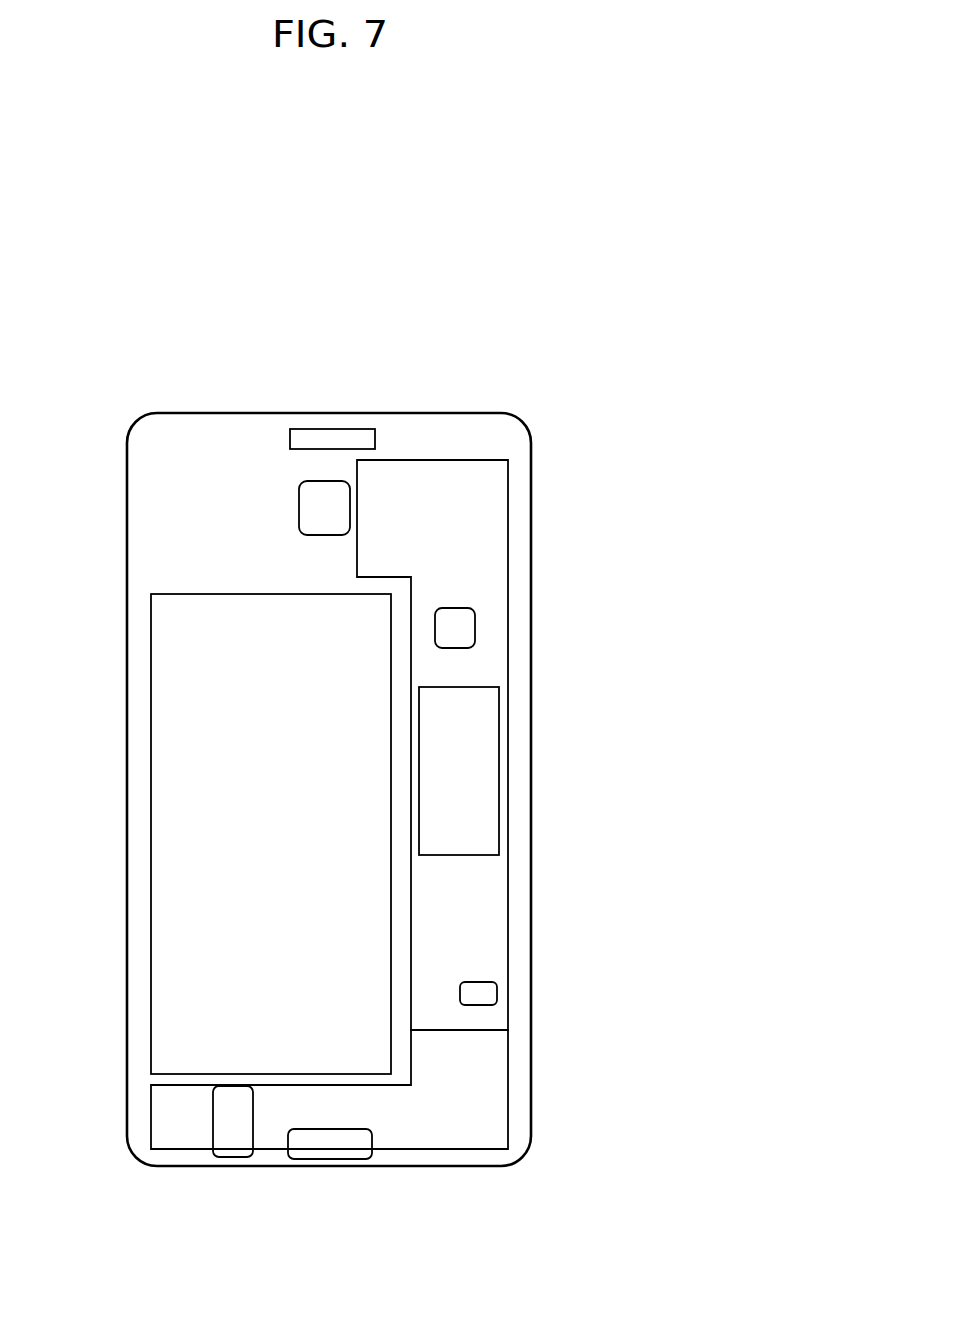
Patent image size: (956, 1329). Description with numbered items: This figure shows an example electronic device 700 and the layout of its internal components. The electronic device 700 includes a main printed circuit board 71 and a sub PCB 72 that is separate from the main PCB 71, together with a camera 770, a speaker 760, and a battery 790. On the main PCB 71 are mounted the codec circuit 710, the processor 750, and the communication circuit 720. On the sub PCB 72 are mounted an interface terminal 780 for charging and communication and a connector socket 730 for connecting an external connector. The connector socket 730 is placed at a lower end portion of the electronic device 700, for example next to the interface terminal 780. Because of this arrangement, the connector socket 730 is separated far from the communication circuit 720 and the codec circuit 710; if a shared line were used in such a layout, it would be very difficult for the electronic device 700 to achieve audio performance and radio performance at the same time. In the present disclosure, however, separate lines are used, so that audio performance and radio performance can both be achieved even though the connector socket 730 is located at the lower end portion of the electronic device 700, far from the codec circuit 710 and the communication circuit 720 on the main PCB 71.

The electronic device 700 is at (644, 279).
The main printed circuit board 71 is at (482, 892).
The sub PCB 72 is at (482, 1088).
The codec circuit 710 is at (462, 630).
The communication circuit 720 is at (482, 997).
The connector socket 730 is at (232, 1147).
The processor 750 is at (482, 713).
The speaker 760 is at (368, 440).
The camera 770 is at (315, 498).
The interface terminal 780 is at (333, 1147).
The battery 790 is at (177, 783).